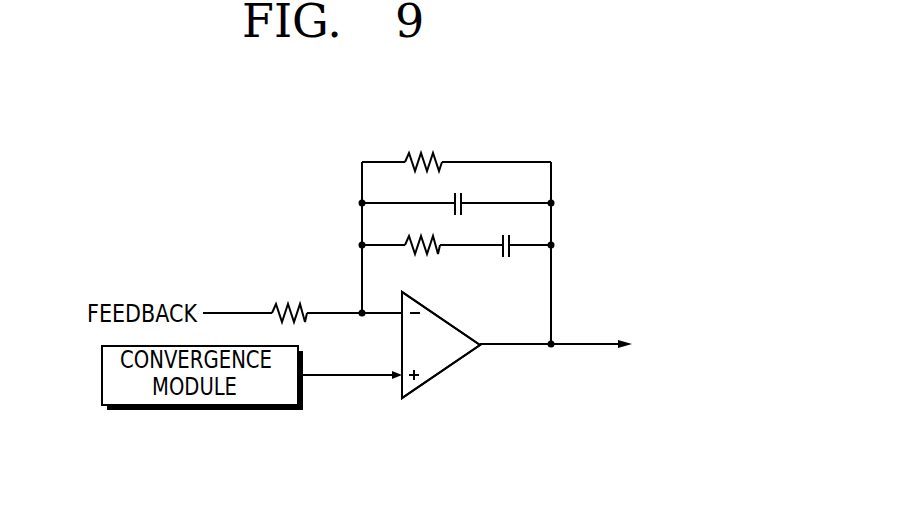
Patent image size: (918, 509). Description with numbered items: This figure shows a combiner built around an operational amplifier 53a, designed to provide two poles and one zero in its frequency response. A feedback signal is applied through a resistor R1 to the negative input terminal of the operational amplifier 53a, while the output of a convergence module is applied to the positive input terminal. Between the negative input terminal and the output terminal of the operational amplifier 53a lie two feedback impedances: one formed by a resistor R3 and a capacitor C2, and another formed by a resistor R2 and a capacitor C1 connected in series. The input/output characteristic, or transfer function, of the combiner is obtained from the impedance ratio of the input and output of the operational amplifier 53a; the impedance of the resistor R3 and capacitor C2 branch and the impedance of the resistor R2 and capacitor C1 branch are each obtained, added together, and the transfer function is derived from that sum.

The operational amplifier 53a is at (443, 370).
The resistor R1 is at (289, 298).
The resistor R2 is at (422, 266).
The resistor R3 is at (423, 145).
The capacitor C1 is at (505, 265).
The capacitor C2 is at (459, 192).